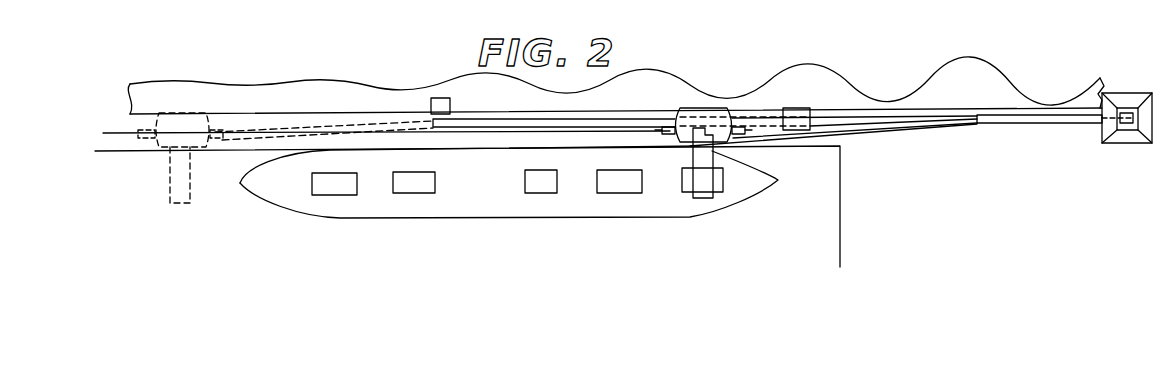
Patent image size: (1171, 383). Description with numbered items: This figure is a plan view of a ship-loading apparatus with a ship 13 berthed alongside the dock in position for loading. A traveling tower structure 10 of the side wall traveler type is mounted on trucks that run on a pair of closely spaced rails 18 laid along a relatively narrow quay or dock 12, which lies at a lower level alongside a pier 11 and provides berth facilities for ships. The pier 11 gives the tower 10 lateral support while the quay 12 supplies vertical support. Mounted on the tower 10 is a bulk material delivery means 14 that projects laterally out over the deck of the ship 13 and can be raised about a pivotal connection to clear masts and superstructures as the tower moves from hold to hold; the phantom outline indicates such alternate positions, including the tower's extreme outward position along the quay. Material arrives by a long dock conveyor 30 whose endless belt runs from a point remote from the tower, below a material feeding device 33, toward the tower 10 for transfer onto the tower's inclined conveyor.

The traveling tower structure 10 is at (195, 103).
The pier 11 is at (899, 82).
The quay or dock 12 is at (811, 152).
The ship 13 is at (493, 218).
The bulk material delivery means 14 is at (702, 205).
The rails 18 is at (628, 130).
The dock conveyor 30 is at (993, 127).
The material feeding device 33 is at (1122, 144).